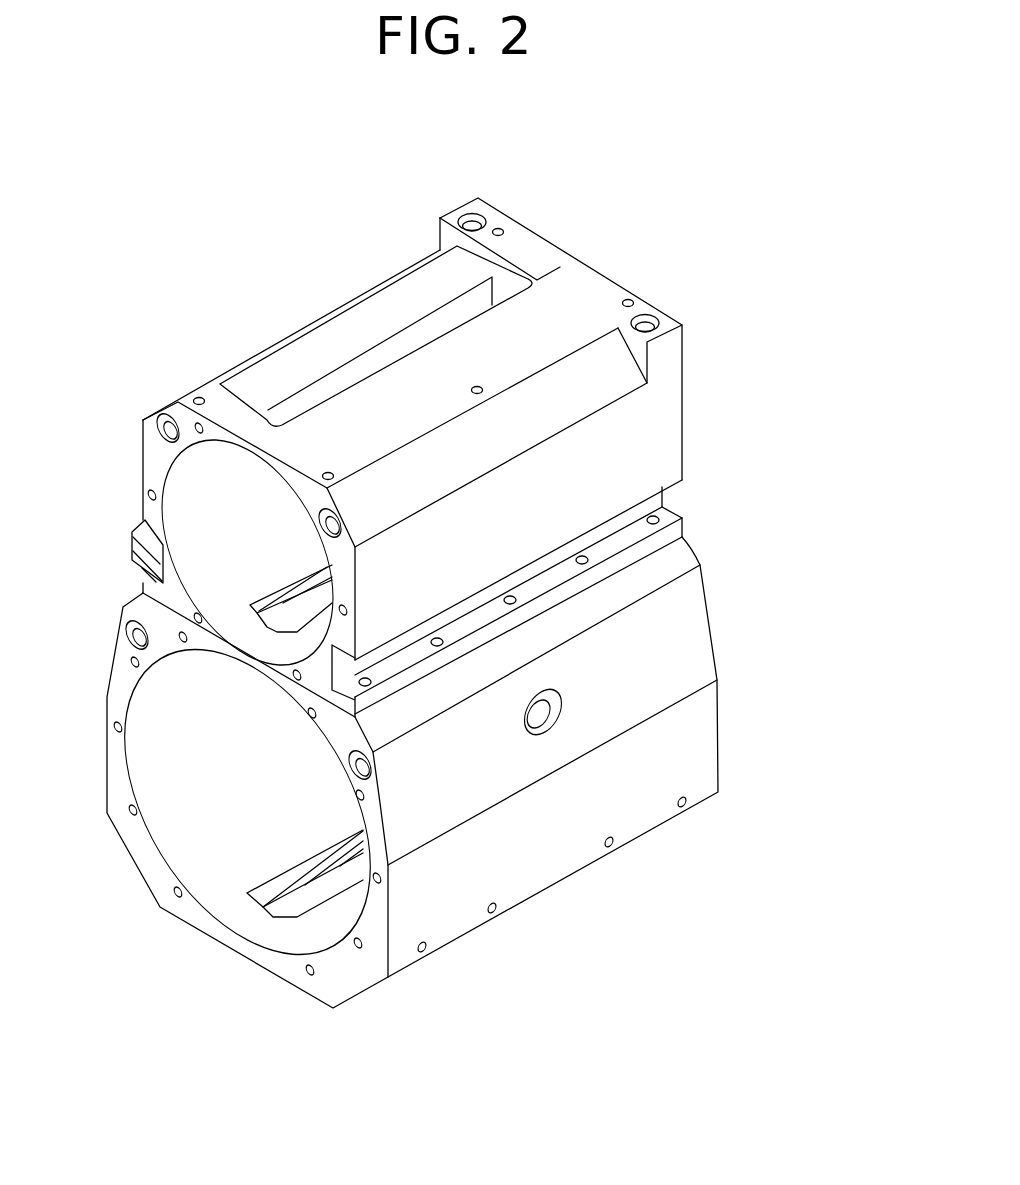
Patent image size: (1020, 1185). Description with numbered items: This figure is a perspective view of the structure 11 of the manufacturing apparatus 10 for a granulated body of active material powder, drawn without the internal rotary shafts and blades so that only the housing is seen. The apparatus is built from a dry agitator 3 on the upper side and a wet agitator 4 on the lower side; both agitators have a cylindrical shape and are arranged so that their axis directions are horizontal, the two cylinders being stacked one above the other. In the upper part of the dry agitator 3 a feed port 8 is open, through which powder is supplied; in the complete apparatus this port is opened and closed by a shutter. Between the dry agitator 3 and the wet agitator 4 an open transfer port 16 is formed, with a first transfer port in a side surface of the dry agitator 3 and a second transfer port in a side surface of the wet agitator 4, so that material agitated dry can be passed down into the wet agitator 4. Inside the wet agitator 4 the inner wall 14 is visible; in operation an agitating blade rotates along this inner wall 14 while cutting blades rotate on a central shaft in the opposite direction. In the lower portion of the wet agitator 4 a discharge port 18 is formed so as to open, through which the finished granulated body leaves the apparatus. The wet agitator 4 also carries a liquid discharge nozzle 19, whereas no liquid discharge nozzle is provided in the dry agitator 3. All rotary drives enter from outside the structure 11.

The manufacturing apparatus 10 is at (436, 590).
The structure 11 is at (650, 225).
The dry agitator 3 is at (685, 408).
The wet agitator 4 is at (713, 633).
The feed port 8 is at (375, 358).
The inner wall 14 is at (218, 825).
The transfer port 16 is at (302, 613).
The discharge port 18 is at (288, 910).
The liquid discharge nozzle 19 is at (560, 711).